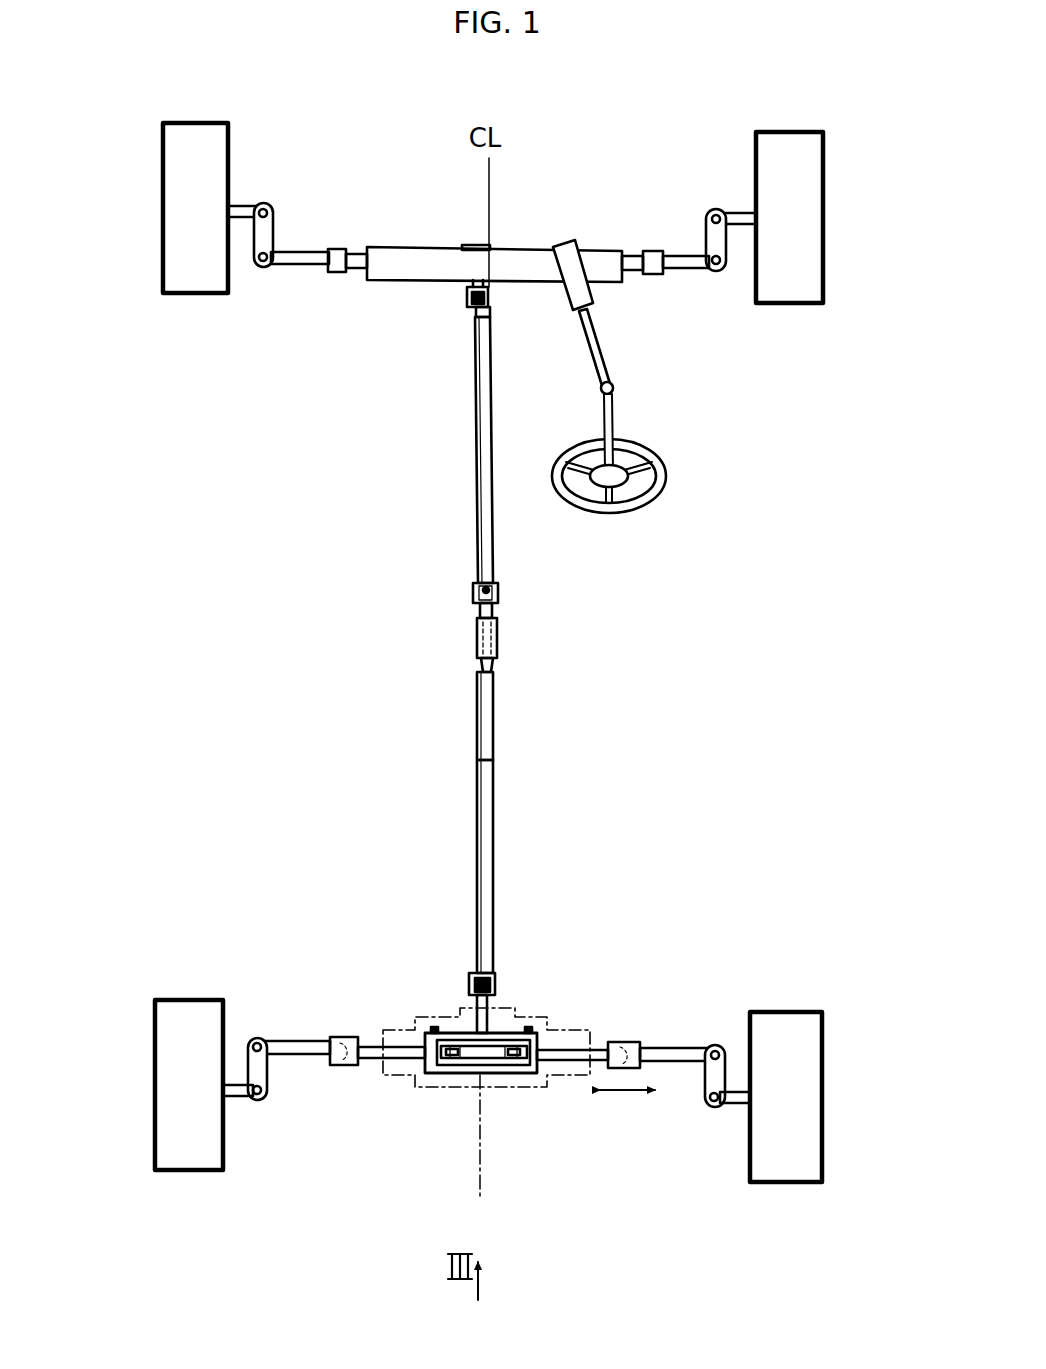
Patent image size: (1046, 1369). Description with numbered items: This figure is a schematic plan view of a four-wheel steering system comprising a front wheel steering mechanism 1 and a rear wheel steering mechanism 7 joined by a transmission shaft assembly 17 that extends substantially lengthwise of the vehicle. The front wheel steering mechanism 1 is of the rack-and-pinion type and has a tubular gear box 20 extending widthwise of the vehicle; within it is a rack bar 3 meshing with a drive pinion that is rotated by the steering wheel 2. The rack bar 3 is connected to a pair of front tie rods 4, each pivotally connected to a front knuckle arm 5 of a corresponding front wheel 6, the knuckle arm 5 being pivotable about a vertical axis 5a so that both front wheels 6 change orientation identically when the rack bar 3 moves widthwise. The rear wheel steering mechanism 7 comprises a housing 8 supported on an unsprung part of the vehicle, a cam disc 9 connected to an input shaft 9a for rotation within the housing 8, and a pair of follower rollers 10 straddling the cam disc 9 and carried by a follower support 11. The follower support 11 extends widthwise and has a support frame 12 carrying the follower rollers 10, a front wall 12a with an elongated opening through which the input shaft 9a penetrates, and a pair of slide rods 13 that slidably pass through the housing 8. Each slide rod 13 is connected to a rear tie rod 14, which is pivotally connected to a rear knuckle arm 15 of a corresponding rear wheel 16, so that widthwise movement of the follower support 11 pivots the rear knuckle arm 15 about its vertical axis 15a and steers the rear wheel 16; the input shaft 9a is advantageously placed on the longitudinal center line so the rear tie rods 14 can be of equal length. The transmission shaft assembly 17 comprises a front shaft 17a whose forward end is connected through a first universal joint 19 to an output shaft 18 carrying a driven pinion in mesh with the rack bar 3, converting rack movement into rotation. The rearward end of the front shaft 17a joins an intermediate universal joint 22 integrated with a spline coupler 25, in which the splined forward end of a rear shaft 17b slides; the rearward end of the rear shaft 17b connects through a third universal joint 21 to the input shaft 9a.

The front wheel steering mechanism 1 is at (417, 246).
The steering wheel 2 is at (667, 478).
The rack bar 3 is at (344, 252).
The front tie rod 4 is at (303, 251).
The front knuckle arm 5 is at (266, 204).
The vertical axis 5a is at (273, 215).
The front wheel 6 is at (222, 125).
The rear wheel steering mechanism 7 is at (576, 992).
The housing 8 is at (597, 1016).
The cam disc 9 is at (470, 1075).
The input shaft 9a is at (475, 1010).
The follower roller 10 is at (513, 1030).
The follower support 11 is at (505, 1075).
The support frame 12 is at (538, 1080).
The front wall 12a is at (447, 1035).
The slide rod 13 is at (355, 1068).
The rear tie rod 14 is at (302, 1041).
The rear knuckle arm 15 is at (238, 1098).
The vertical axis 15a is at (264, 1101).
The rear wheel 16 is at (210, 1003).
The transmission shaft assembly 17 is at (496, 696).
The front shaft 17a is at (477, 458).
The rear shaft 17b is at (493, 800).
The output shaft 18 is at (462, 292).
The first universal joint 19 is at (466, 312).
The gear box 20 is at (534, 247).
The third universal joint 21 is at (500, 975).
The intermediate universal joint 22 is at (498, 592).
The spline coupler 25 is at (477, 640).